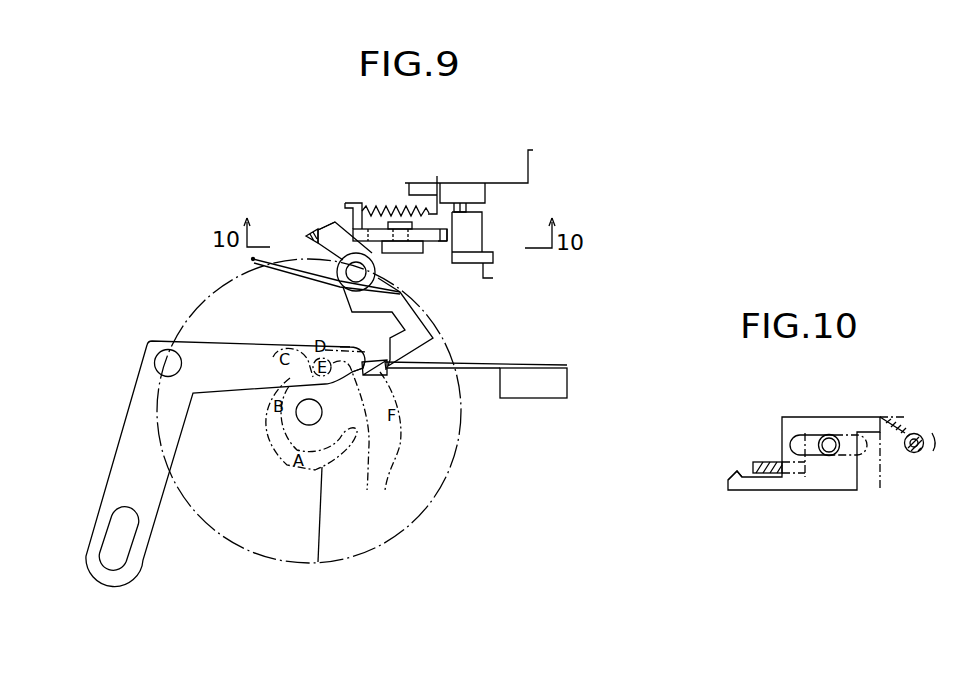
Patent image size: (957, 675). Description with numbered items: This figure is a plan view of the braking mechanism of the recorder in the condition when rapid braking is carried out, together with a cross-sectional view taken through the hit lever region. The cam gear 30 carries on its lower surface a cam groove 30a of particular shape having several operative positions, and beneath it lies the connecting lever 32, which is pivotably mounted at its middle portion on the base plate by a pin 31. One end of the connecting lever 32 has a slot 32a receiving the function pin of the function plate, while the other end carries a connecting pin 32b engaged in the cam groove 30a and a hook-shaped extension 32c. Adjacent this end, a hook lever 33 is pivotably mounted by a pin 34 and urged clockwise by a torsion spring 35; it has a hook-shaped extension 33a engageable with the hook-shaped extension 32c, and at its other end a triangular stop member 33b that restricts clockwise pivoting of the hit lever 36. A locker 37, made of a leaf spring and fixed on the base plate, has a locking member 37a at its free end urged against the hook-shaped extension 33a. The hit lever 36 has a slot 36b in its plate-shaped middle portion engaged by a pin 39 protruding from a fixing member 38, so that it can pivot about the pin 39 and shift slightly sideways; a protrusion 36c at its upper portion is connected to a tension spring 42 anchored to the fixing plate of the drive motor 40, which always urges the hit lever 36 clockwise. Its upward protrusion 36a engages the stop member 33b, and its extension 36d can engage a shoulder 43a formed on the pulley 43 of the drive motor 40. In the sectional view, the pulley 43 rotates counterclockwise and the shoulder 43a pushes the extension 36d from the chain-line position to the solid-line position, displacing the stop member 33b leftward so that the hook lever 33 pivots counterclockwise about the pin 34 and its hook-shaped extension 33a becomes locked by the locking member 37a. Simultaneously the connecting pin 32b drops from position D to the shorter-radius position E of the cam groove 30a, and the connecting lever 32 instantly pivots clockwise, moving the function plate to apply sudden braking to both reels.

In FIG. 9, the cam gear 30 is at (272, 562).
In FIG. 9, the cam groove 30a is at (318, 562).
In FIG. 9, the pin 31 is at (156, 357).
In FIG. 9, the connecting lever 32 is at (127, 433).
In FIG. 9, the slot 32a is at (113, 532).
In FIG. 9, the connecting pin 32b is at (352, 346).
In FIG. 9, the hook-shaped extension 32c is at (362, 361).
In FIG. 9, the hook lever 33 is at (408, 316).
In FIG. 9, the hook-shaped extension 33a is at (380, 360).
In FIG. 9, the triangular stop member 33b is at (332, 224).
In FIG. 10, the triangular stop member 33b is at (765, 462).
In FIG. 9, the pin 34 is at (405, 254).
In FIG. 9, the torsion spring 35 is at (252, 260).
In FIG. 9, the hit lever 36 is at (441, 249).
In FIG. 10, the hit lever 36 is at (823, 483).
In FIG. 9, the upward protrusion 36a is at (305, 234).
In FIG. 10, the upward protrusion 36a is at (740, 481).
In FIG. 10, the slot 36b is at (805, 435).
In FIG. 9, the protrusion 36c is at (353, 216).
In FIG. 9, the extension 36d is at (446, 228).
In FIG. 10, the extension 36d is at (881, 418).
In FIG. 9, the locker 37 is at (390, 368).
In FIG. 9, the locking member 37a is at (392, 379).
In FIG. 9, the fixing member 38 is at (443, 243).
In FIG. 9, the pin 39 is at (402, 222).
In FIG. 10, the pin 39 is at (831, 436).
In FIG. 9, the drive motor 40 is at (529, 160).
In FIG. 9, the tension spring 42 is at (382, 209).
In FIG. 9, the pulley 43 is at (496, 218).
In FIG. 9, the shoulder 43a is at (450, 226).
In FIG. 10, the shoulder 43a is at (907, 430).